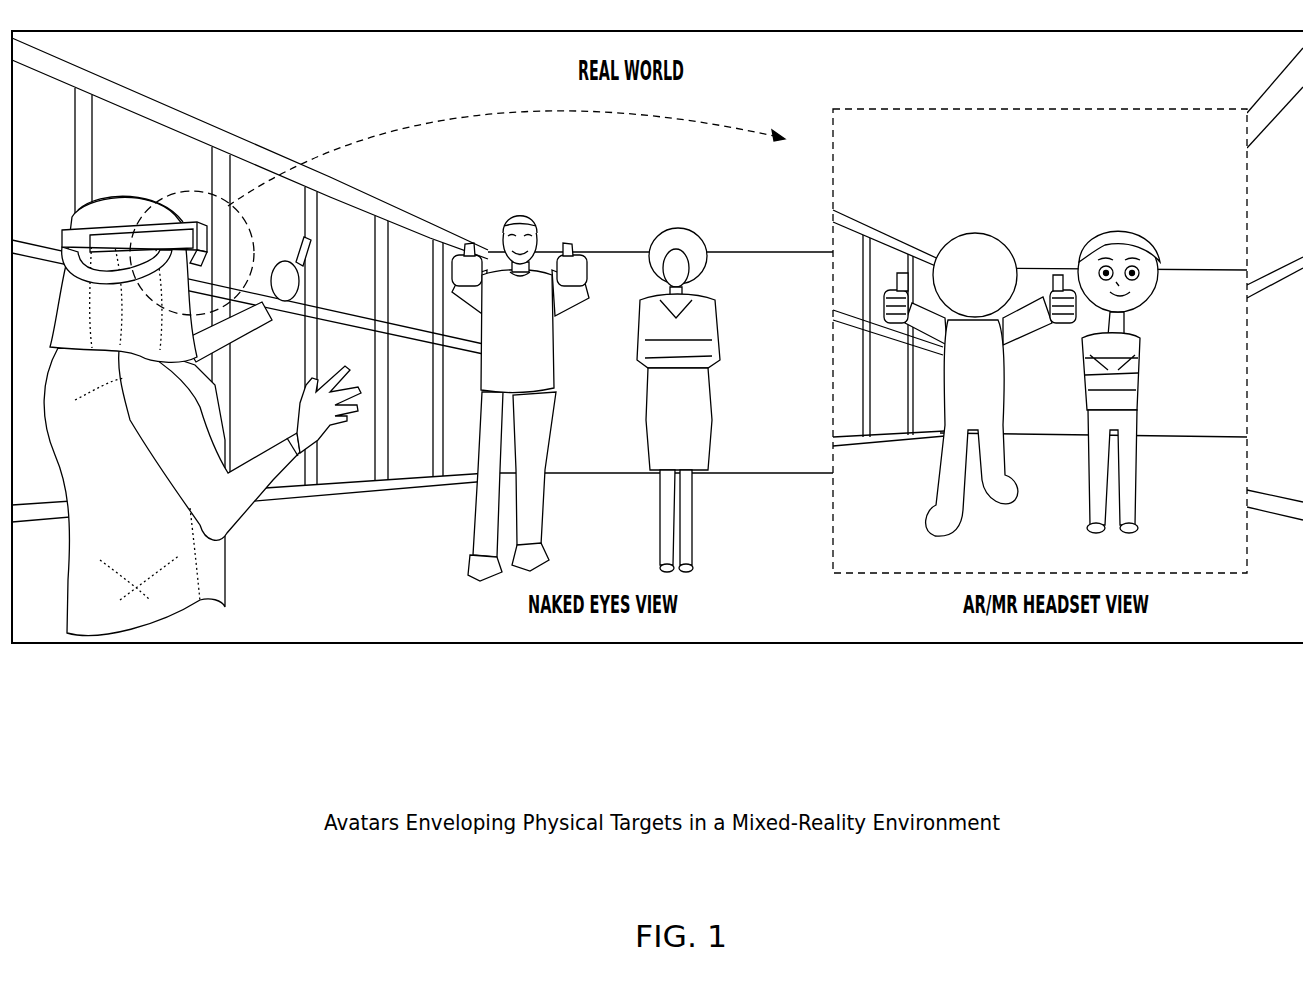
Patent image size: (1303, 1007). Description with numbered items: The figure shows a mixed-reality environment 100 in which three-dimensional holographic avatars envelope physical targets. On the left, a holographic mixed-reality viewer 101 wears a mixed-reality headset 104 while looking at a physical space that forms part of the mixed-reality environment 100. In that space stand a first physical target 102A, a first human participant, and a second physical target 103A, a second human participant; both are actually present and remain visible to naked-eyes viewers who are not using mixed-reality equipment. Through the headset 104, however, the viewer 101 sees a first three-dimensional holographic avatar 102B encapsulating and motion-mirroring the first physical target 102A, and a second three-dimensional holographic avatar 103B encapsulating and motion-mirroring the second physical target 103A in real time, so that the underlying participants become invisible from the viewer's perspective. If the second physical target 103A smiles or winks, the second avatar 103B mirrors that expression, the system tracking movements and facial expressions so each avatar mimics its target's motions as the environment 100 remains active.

The mixed-reality environment 100 is at (693, 753).
The holographic mixed-reality (HMR) viewer 101 is at (202, 415).
The first physical target 102A is at (520, 398).
The second physical target 103A is at (678, 400).
The first 3D holographic avatar 102B is at (980, 362).
The second 3D holographic avatar 103B is at (1119, 360).
The mixed-reality headset 104 is at (195, 222).